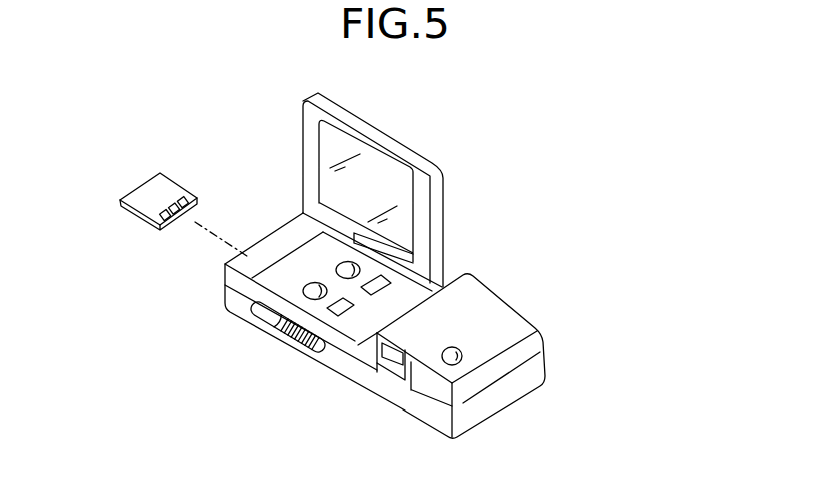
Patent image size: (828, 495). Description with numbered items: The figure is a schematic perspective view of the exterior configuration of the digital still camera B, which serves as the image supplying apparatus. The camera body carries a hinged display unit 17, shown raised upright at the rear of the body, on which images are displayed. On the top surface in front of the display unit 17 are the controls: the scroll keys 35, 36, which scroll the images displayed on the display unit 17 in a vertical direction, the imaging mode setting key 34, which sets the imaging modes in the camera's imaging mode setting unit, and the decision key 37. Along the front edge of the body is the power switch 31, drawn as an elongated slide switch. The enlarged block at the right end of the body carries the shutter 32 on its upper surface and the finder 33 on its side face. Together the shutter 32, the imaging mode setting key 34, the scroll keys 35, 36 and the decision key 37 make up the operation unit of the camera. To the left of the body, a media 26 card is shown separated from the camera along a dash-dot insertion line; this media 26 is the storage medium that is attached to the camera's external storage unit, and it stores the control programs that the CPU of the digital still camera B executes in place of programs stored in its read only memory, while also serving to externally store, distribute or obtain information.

The display unit 17 is at (372, 168).
The media 26 is at (163, 188).
The power switch 31 is at (287, 340).
The shutter 32 is at (462, 365).
The finder 33 is at (392, 362).
The imaging mode setting key 34 is at (388, 280).
The scroll key 35 is at (340, 263).
The scroll key 36 is at (308, 282).
The decision key 37 is at (340, 314).
The digital still camera B is at (543, 178).